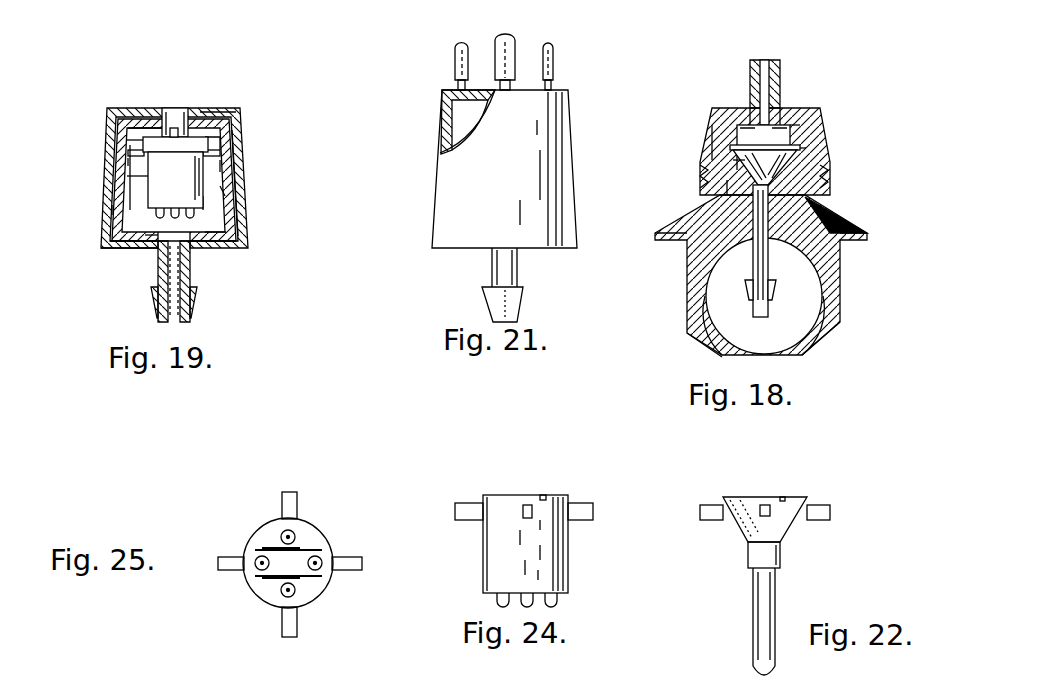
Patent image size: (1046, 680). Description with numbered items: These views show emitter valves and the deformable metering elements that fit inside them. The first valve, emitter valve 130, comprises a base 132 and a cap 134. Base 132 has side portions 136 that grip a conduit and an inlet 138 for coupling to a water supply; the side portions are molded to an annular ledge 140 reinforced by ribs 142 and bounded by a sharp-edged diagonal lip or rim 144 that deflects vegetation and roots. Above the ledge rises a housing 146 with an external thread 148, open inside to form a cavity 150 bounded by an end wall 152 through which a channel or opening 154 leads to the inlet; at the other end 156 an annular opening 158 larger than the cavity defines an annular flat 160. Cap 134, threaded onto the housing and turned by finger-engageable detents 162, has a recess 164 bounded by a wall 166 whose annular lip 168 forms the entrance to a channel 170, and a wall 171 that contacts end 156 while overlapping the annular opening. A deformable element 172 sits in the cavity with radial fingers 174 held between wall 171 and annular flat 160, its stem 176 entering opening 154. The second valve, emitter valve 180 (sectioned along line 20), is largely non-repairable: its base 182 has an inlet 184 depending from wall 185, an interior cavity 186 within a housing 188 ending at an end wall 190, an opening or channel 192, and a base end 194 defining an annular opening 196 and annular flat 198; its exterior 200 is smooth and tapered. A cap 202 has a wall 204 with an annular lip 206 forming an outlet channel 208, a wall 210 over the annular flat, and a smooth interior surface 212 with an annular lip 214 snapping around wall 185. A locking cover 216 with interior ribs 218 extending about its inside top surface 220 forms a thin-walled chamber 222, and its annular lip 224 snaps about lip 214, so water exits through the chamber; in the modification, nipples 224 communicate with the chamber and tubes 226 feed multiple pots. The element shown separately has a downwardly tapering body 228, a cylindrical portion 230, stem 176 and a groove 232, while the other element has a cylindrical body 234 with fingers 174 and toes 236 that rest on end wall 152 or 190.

In FIG. 19, the section line 20- 20 is at (98, 150).
In FIG. 18, the emitter valve 130 is at (698, 84).
In FIG. 18, the base 132 is at (834, 348).
In FIG. 18, the cap 134 is at (832, 108).
In FIG. 18, the side portions 136 is at (690, 324).
In FIG. 18, the inlet 138 is at (745, 288).
In FIG. 18, the annular ledge 140 is at (700, 212).
In FIG. 18, the ribs 142 is at (840, 270).
In FIG. 18, the sharp-edged diagonal lip or rim 144 is at (656, 239).
In FIG. 18, the housing 146 is at (830, 186).
In FIG. 18, the external thread 148 is at (735, 162).
In FIG. 18, the cavity 150 is at (735, 148).
In FIG. 18, the end wall 152 is at (727, 190).
In FIG. 18, the channel or opening 154 is at (780, 272).
In FIG. 18, the end of housing 156 is at (712, 126).
In FIG. 18, the annular opening 158 is at (802, 150).
In FIG. 18, the annular flat 160 is at (790, 170).
In FIG. 18, the finger-engageable detents 162 is at (830, 172).
In FIG. 18, the recess 164 is at (745, 112).
In FIG. 18, the wall 166 is at (800, 112).
In FIG. 18, the annular lip 168 is at (780, 114).
In FIG. 18, the channel 170 is at (772, 60).
In FIG. 18, the wall 171 is at (806, 146).
In FIG. 19, the deformable element 172 is at (188, 191).
In FIG. 18, the deformable element 172 is at (810, 202).
In FIG. 25, the deformable element 172 is at (337, 544).
In FIG. 24, the deformable element 172 is at (518, 486).
In FIG. 22, the deformable element 172 is at (734, 576).
In FIG. 19, the radial fingers 174 is at (212, 138).
In FIG. 18, the radial fingers 174 is at (736, 126).
In FIG. 25, the radial fingers 174 is at (234, 562).
In FIG. 24, the radial fingers 174 is at (470, 503).
In FIG. 22, the radial fingers 174 is at (710, 505).
In FIG. 18, the stem 176 is at (752, 252).
In FIG. 22, the stem 176 is at (757, 611).
In FIG. 19, the emitter valve 180 is at (247, 54).
In FIG. 21, the emitter valve 180 is at (395, 226).
In FIG. 19, the base 182 is at (202, 250).
In FIG. 19, the inlet 184 is at (195, 286).
In FIG. 19, the wall 185 is at (150, 244).
In FIG. 19, the interior cavity 186 is at (206, 204).
In FIG. 19, the housing 188 is at (228, 237).
In FIG. 19, the end wall 190 is at (230, 243).
In FIG. 19, the opening or channel 192 is at (176, 322).
In FIG. 19, the housing or base end 194 is at (218, 140).
In FIG. 19, the annular opening 196 is at (128, 162).
In FIG. 19, the annular flat 198 is at (136, 176).
In FIG. 19, the exterior 200 is at (222, 166).
In FIG. 19, the cap 202 is at (110, 213).
In FIG. 19, the wall 204 is at (142, 142).
In FIG. 19, the annular lip 206 is at (182, 136).
In FIG. 19, the outlet channel 208 is at (172, 118).
In FIG. 19, the wall 210 is at (146, 140).
In FIG. 19, the interior surface 212 is at (222, 190).
In FIG. 19, the annular lip 214 is at (124, 252).
In FIG. 19, the locking cover 216 is at (178, 110).
In FIG. 19, the interior ribs 218 is at (238, 124).
In FIG. 19, the inside top surface 220 is at (138, 116).
In FIG. 19, the thin-walled chamber 222 is at (238, 158).
In FIG. 21, the thin-walled chamber 222 is at (470, 106).
In FIG. 19, the annular lip / nipples 224 is at (112, 245).
In FIG. 21, the annular lip / nipples 224 is at (456, 86).
In FIG. 21, the tubes 226 is at (456, 52).
In FIG. 22, the downwardly tapering body 228 is at (790, 528).
In FIG. 22, the cylindrical portion 230 is at (785, 560).
In FIG. 24, the groove 232 is at (546, 496).
In FIG. 22, the groove 232 is at (784, 497).
In FIG. 25, the cylindrical body 234 is at (260, 594).
In FIG. 24, the cylindrical body 234 is at (568, 560).
In FIG. 25, the toes 236 is at (292, 588).
In FIG. 24, the toes 236 is at (560, 604).